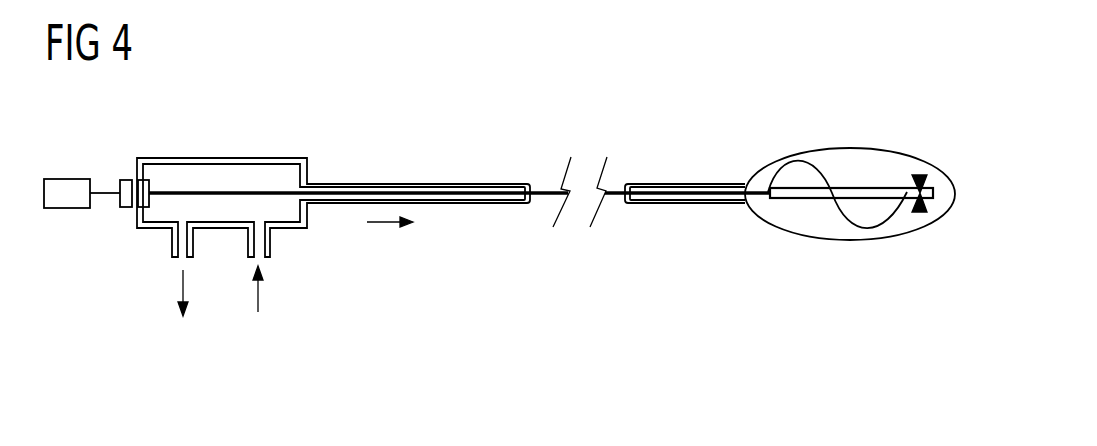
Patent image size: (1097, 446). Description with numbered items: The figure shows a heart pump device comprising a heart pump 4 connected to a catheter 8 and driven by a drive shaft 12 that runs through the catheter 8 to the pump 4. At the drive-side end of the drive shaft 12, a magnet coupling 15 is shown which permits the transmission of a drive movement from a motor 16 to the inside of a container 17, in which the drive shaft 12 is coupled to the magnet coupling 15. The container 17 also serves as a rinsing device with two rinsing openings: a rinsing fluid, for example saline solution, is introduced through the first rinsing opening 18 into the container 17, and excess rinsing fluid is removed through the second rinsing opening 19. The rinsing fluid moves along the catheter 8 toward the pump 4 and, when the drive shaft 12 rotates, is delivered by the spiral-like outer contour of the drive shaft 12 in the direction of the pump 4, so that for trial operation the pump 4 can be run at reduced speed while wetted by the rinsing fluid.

The heart pump 4 is at (840, 148).
The catheter 8 is at (685, 186).
The drive shaft 12 is at (550, 192).
The magnet coupling 15 is at (146, 177).
The motor 16 is at (70, 178).
The container 17 is at (285, 158).
The first rinsing opening 18 is at (260, 260).
The second rinsing opening 19 is at (182, 258).